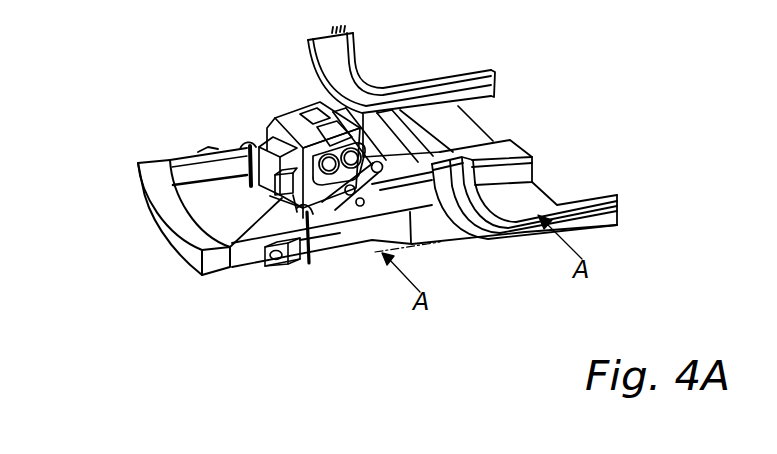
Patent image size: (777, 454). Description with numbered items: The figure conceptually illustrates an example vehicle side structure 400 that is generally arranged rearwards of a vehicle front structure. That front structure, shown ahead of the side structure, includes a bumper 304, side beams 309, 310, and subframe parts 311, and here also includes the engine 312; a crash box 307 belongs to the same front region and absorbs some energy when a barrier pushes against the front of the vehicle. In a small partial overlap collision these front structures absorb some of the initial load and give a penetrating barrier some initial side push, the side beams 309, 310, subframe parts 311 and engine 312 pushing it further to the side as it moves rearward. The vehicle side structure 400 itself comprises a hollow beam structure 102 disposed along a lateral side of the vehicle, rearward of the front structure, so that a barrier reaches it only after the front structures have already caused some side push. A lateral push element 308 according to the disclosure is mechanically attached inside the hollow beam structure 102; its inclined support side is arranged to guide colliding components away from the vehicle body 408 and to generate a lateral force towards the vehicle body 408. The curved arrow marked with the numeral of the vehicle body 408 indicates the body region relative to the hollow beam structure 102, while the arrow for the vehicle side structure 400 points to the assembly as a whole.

The hollow beam structure 102 is at (490, 233).
The bumper 304 is at (158, 228).
The crash box 307 is at (240, 262).
The lateral push element 308 is at (288, 264).
The side beam 309 is at (334, 239).
The side beam 310 is at (438, 228).
The subframe part 311 is at (397, 183).
The engine 312 is at (292, 114).
The vehicle side structure 400 is at (512, 261).
The vehicle body 408 is at (542, 149).